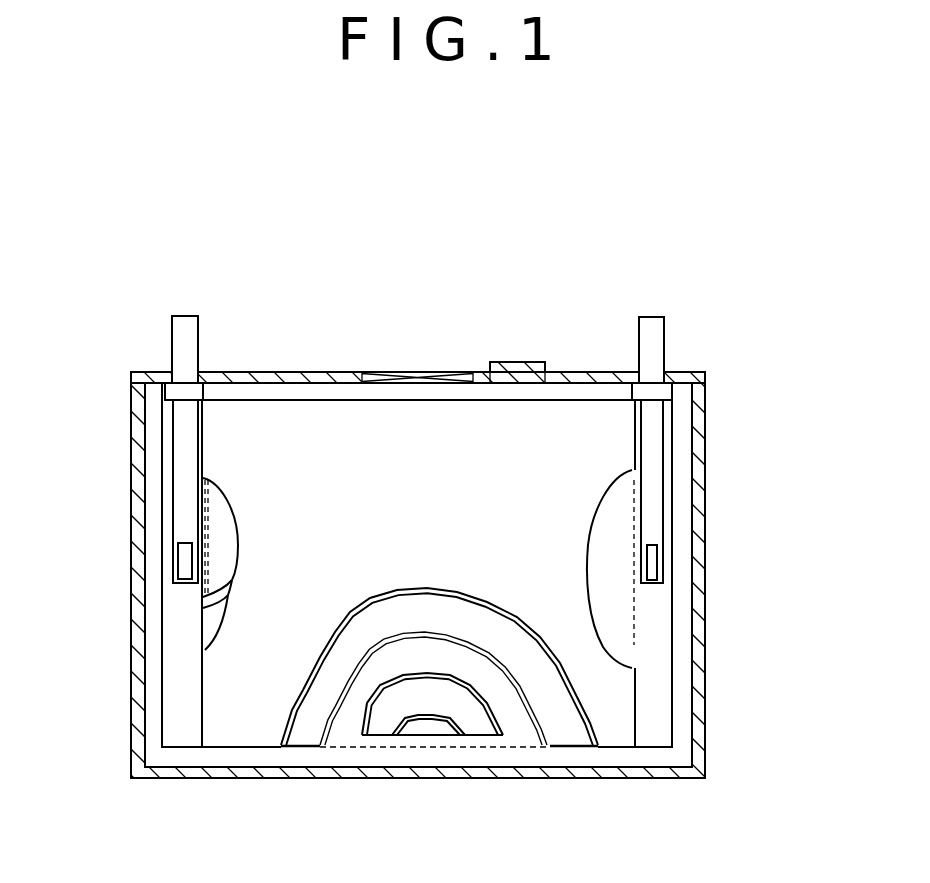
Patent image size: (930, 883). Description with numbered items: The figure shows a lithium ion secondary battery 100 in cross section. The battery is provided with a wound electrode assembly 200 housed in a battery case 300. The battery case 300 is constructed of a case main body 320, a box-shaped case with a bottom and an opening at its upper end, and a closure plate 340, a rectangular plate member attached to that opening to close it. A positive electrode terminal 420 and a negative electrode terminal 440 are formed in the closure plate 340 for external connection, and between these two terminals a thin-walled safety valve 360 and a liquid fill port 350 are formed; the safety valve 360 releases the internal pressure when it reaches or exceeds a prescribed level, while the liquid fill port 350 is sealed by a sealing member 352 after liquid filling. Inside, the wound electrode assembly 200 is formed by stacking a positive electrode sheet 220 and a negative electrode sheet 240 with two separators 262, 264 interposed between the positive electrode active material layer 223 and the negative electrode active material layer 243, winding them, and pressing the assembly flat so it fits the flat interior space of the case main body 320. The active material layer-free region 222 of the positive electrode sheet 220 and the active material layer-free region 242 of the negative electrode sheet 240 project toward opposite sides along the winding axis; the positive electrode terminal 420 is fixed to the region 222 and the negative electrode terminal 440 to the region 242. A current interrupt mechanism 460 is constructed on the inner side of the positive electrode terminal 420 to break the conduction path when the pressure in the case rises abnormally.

The lithium ion secondary battery 100 is at (465, 549).
The wound electrode assembly 200 is at (429, 579).
The positive electrode sheet 220 is at (382, 728).
The active material layer-free region 222 is at (178, 722).
The positive electrode active material layer 223 is at (223, 538).
The negative electrode sheet 240 is at (302, 730).
The active material layer-free region 242 is at (662, 614).
The negative electrode active material layer 243 is at (220, 622).
The separator 262 is at (240, 679).
The separator 264 is at (205, 599).
The battery case 300 is at (465, 517).
The case main body 320 is at (702, 752).
The closure plate 340 is at (465, 517).
The liquid fill port 350 is at (511, 303).
The sealing member 352 is at (508, 362).
The safety valve 360 is at (420, 372).
The positive electrode terminal 420 is at (185, 316).
The negative electrode terminal 440 is at (650, 317).
The current interrupt mechanism 460 is at (208, 391).